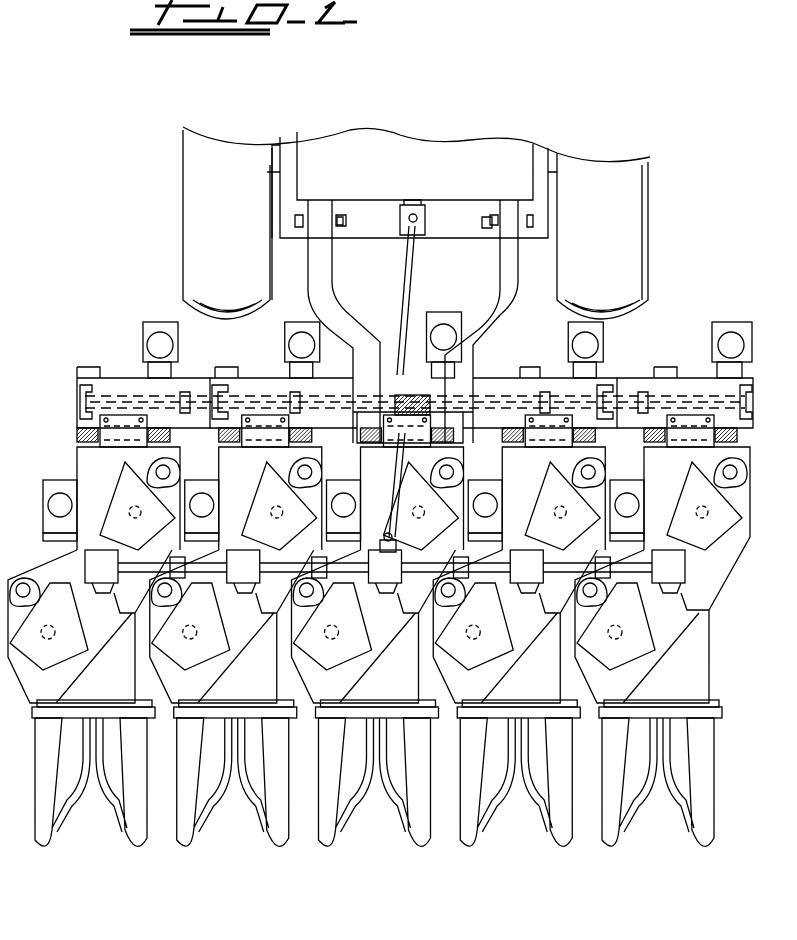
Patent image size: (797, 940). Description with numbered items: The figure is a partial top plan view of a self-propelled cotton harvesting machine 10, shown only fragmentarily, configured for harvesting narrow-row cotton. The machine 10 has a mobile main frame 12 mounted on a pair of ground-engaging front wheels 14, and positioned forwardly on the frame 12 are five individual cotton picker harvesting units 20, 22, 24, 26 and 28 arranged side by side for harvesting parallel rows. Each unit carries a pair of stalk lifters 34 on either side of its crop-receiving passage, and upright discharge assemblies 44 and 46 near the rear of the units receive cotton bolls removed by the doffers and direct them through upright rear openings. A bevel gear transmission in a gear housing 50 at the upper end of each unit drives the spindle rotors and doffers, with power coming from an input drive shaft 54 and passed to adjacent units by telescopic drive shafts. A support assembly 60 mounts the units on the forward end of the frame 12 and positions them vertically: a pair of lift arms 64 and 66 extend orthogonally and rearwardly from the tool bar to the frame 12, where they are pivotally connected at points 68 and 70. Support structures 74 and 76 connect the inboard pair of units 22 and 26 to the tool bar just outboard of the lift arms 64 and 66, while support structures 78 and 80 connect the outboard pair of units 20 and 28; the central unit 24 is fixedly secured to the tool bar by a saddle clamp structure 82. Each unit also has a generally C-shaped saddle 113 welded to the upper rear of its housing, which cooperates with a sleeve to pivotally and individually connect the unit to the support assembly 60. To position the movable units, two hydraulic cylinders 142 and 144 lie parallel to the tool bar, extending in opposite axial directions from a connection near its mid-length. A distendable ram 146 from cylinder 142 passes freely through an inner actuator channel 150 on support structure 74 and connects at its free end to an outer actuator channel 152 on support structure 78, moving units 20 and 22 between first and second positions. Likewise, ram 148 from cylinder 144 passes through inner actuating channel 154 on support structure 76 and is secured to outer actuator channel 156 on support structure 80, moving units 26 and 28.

The cotton harvesting machine 10 is at (416, 253).
The main frame 12 is at (416, 264).
The front wheels 14 is at (228, 217).
The harvesting unit 20 is at (663, 499).
The harvesting unit 22 is at (542, 520).
The harvesting unit 24 is at (401, 515).
The harvesting unit 26 is at (259, 520).
The harvesting unit 28 is at (117, 520).
The stalk lifters 34 is at (176, 857).
The discharge assembly 44 is at (645, 493).
The discharge assembly 46 is at (727, 329).
The gear housing 50 is at (696, 595).
The input drive shaft 54 is at (410, 268).
The support assembly 60 is at (110, 372).
The lift arm 64 is at (508, 268).
The lift arm 66 is at (318, 287).
The pivot point 68 is at (488, 226).
The pivot point 70 is at (342, 222).
The support structure 74 is at (550, 380).
The support structure 76 is at (272, 378).
The support structure 78 is at (692, 380).
The support structure 80 is at (24, 416).
The saddle clamp structure 82 is at (443, 437).
The saddle 113 is at (55, 447).
The hydraulic cylinder 142 is at (483, 390).
The hydraulic cylinder 144 is at (328, 390).
The ram 146 is at (630, 400).
The ram 148 is at (115, 398).
The inner actuator channel 150 is at (603, 395).
The outer actuator channel 152 is at (742, 400).
The inner actuating channel 154 is at (212, 385).
The outer actuator channel 156 is at (80, 393).